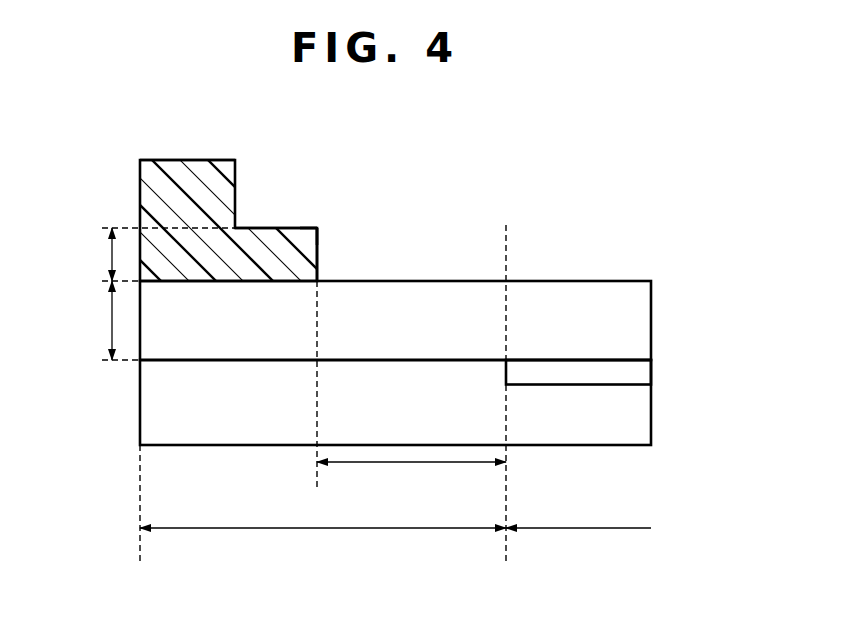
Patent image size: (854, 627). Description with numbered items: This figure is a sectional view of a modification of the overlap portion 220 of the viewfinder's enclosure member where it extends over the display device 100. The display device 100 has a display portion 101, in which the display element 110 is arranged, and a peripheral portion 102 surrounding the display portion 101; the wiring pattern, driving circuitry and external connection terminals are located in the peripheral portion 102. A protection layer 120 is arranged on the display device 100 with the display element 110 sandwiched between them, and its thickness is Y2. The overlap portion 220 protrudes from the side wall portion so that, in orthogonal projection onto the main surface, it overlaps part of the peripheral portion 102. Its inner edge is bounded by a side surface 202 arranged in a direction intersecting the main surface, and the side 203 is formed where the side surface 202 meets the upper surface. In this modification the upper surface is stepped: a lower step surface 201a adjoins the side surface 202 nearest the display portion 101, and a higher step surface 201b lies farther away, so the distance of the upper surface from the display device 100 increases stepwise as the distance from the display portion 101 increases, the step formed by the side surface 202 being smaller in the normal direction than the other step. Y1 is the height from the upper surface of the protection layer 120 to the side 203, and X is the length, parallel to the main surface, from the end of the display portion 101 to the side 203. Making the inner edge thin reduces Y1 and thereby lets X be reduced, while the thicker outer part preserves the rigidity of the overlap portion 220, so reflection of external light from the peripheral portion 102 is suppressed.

The overlap portion 220 is at (163, 160).
The upper surface of structure 201b is at (208, 160).
The step surface of structure 201a is at (260, 228).
The side 203 is at (317, 228).
The side surface 202 is at (317, 260).
The protection layer 120 is at (642, 322).
The display element 110 is at (642, 372).
The display device 100 is at (642, 420).
The peripheral portion 102 is at (318, 528).
The display portion 101 is at (589, 528).
The length Y1 is at (108, 252).
The thickness Y2 is at (108, 323).
The length X is at (413, 462).